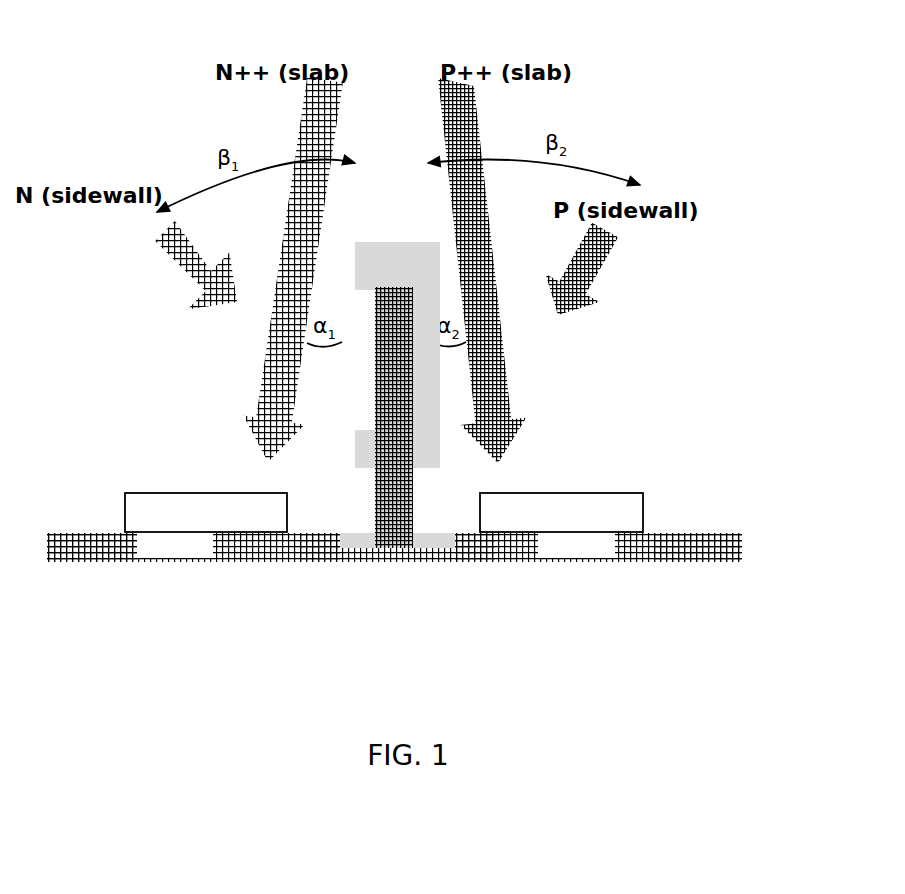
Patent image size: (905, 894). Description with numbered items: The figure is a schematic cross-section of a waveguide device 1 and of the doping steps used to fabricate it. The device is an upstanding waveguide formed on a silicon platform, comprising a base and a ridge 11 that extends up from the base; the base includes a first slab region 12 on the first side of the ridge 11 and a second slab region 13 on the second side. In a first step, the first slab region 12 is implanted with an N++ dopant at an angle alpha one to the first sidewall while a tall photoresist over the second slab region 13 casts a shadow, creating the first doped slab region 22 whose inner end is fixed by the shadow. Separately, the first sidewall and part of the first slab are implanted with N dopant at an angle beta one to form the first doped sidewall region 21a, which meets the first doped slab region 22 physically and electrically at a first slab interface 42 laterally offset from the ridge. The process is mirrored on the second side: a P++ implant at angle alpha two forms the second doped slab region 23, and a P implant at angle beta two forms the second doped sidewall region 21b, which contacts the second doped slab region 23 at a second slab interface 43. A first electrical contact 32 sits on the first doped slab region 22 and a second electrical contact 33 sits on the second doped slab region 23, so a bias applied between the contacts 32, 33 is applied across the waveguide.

The waveguide device 1 is at (713, 97).
The ridge 11 is at (347, 595).
The first slab region 12 is at (48, 603).
The second slab region 13 is at (447, 613).
The first doped sidewall region 21a is at (365, 490).
The second doped sidewall region 21b is at (413, 397).
The first doped slab region 22 is at (102, 540).
The second doped slab region 23 is at (700, 538).
The first electrical contact 32 is at (206, 512).
The second electrical contact 33 is at (561, 512).
The first slab interface 42 is at (333, 520).
The second slab interface 43 is at (447, 520).